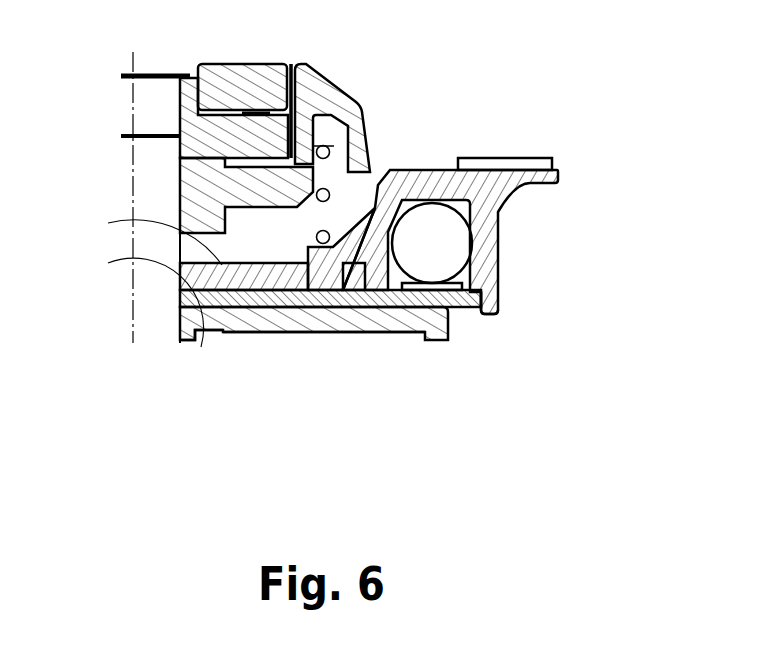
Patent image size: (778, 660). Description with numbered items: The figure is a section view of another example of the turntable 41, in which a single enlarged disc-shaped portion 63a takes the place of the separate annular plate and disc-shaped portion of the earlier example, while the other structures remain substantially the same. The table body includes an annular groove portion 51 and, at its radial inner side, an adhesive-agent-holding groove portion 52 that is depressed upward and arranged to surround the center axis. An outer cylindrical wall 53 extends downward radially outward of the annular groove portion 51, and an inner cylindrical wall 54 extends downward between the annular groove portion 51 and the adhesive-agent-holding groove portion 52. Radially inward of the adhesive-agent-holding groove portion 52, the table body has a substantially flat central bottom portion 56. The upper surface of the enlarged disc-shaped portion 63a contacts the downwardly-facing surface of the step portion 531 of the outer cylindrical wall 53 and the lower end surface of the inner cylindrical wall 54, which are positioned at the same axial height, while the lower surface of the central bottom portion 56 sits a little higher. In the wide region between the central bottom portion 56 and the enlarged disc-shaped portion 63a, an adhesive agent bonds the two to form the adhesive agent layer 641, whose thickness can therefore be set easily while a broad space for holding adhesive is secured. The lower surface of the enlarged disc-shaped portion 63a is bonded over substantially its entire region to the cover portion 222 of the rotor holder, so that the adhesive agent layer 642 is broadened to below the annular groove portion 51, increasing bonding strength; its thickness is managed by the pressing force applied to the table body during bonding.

The turntable 41 is at (542, 79).
The annular groove portion 51 is at (427, 260).
The adhesive-agent-holding groove portion 52 is at (352, 285).
The outer cylindrical wall 53 is at (488, 242).
The step portion 531 is at (479, 295).
The inner cylindrical wall 54 is at (366, 290).
The central bottom portion 56 is at (212, 268).
The enlarged disc-shaped portion 63a is at (348, 306).
The cover portion 222 is at (238, 325).
The adhesive agent layer 641 is at (286, 291).
The adhesive agent layer 642 is at (208, 332).